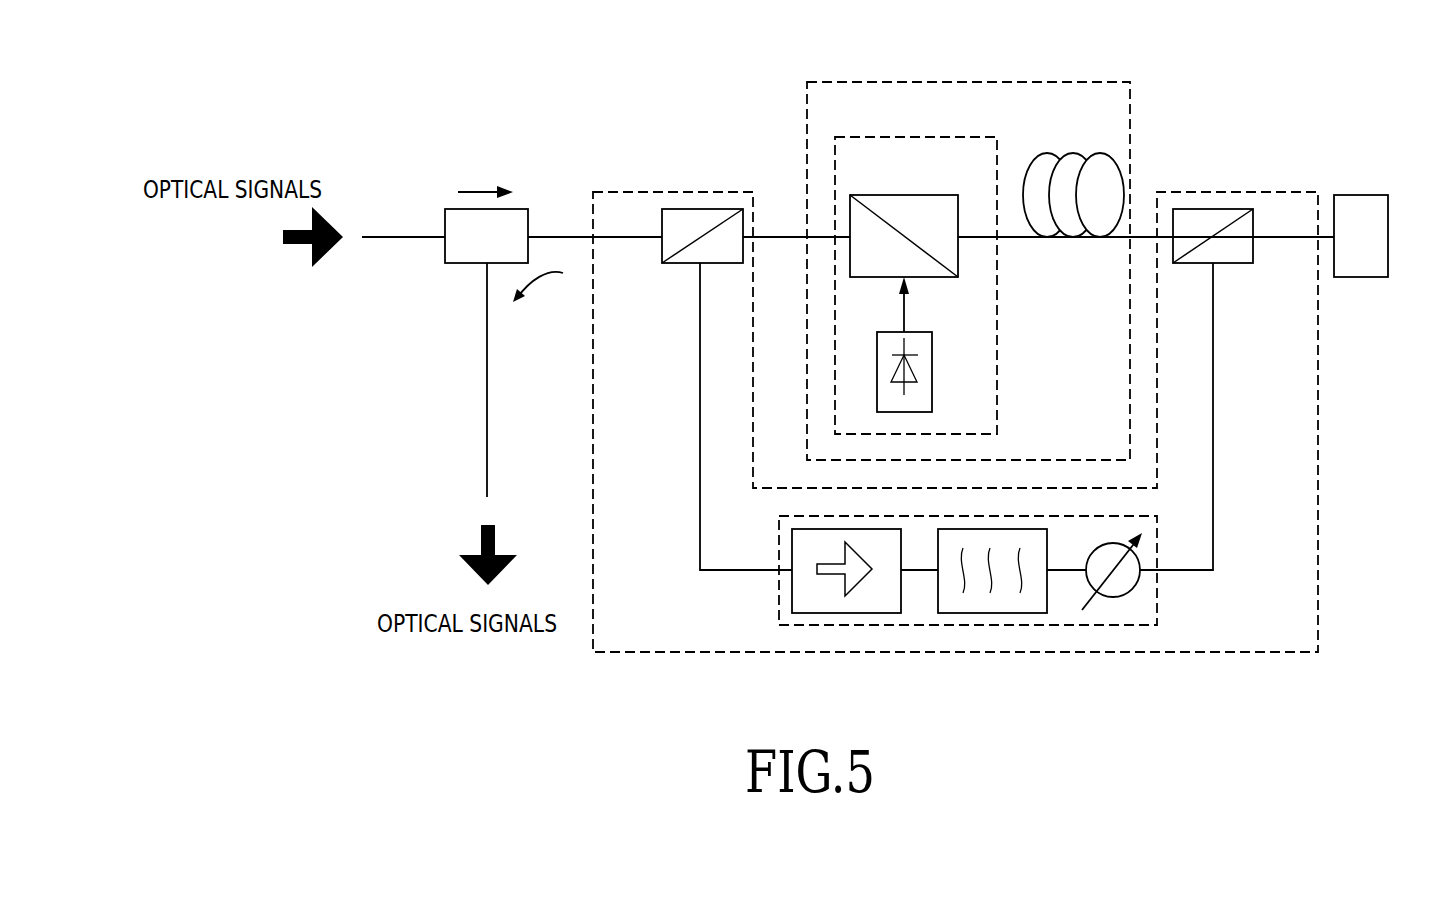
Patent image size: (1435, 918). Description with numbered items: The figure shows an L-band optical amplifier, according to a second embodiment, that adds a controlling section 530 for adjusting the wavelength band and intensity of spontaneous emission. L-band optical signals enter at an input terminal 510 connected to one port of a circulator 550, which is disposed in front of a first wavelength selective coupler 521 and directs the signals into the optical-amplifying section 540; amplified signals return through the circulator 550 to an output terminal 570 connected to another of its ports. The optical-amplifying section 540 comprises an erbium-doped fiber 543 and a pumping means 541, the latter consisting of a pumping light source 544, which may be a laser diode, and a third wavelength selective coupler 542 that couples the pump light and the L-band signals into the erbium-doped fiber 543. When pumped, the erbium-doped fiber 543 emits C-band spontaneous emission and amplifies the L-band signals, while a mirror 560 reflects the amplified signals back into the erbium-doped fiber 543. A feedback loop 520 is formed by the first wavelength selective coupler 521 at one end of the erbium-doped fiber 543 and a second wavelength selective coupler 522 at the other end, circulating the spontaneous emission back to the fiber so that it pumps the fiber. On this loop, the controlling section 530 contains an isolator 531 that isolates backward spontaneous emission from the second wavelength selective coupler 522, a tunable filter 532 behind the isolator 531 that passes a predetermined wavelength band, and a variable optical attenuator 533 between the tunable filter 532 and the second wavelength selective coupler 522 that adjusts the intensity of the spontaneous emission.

The input terminal 510 is at (395, 237).
The feedback loop 520 is at (1327, 491).
The first wavelength selective coupler 521 is at (705, 208).
The second wavelength selective coupler 522 is at (1212, 208).
The controlling section 530 is at (1162, 538).
The isolator 531 is at (847, 613).
The tunable filter 532 is at (983, 613).
The variable optical attenuator 533 is at (1127, 595).
The optical-amplifying section 540 is at (975, 76).
The pumping means 541 is at (914, 128).
The third wavelength selective coupler 542 is at (902, 195).
The erbium-doped fiber 543 is at (1098, 153).
The pumping light source 544 is at (932, 370).
The circulator 550 is at (517, 208).
The mirror 560 is at (1365, 195).
The output terminal 570 is at (487, 462).